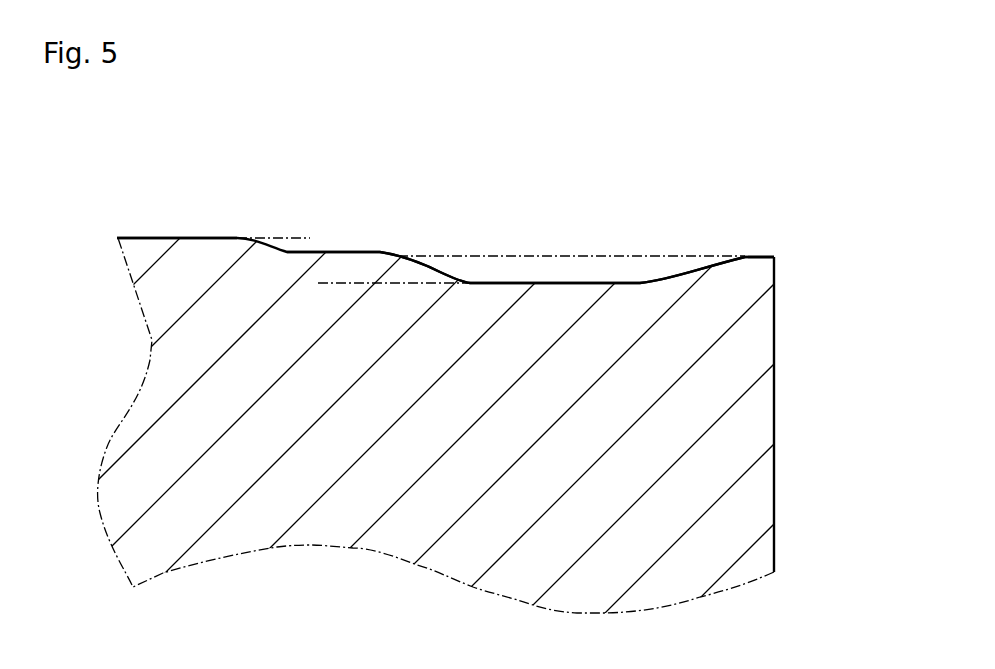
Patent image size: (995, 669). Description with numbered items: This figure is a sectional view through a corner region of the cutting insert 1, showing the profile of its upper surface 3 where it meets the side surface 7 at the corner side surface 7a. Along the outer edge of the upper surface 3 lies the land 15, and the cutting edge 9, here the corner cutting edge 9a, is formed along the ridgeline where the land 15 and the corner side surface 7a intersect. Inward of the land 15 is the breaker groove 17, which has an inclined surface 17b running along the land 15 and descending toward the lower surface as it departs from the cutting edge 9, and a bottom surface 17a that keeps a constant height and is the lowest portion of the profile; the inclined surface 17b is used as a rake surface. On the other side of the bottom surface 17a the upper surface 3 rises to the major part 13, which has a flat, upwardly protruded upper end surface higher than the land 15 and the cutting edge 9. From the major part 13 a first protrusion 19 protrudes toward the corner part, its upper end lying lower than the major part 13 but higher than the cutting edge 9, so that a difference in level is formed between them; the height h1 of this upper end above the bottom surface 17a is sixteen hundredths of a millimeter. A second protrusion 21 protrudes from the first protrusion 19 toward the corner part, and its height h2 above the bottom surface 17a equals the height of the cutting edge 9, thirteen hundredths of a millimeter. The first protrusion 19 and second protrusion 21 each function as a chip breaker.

The cutting insert 1 is at (325, 140).
The upper surface 3 is at (466, 176).
The major part 13 is at (287, 252).
The land 15 is at (774, 257).
The side surface 7 is at (816, 414).
The corner side surface 7a is at (776, 397).
The cutting edge 9 is at (805, 222).
The corner cutting edge 9a is at (777, 256).
The breaker groove 17 is at (607, 218).
The bottom surface 17a is at (639, 153).
The inclined surface 17b is at (644, 214).
The first protrusion 19 is at (292, 218).
The second protrusion 21 is at (469, 283).
The height of the upper end of the first protrusion h1 is at (338, 207).
The height of the upper end of the second protrusion h2 is at (602, 212).